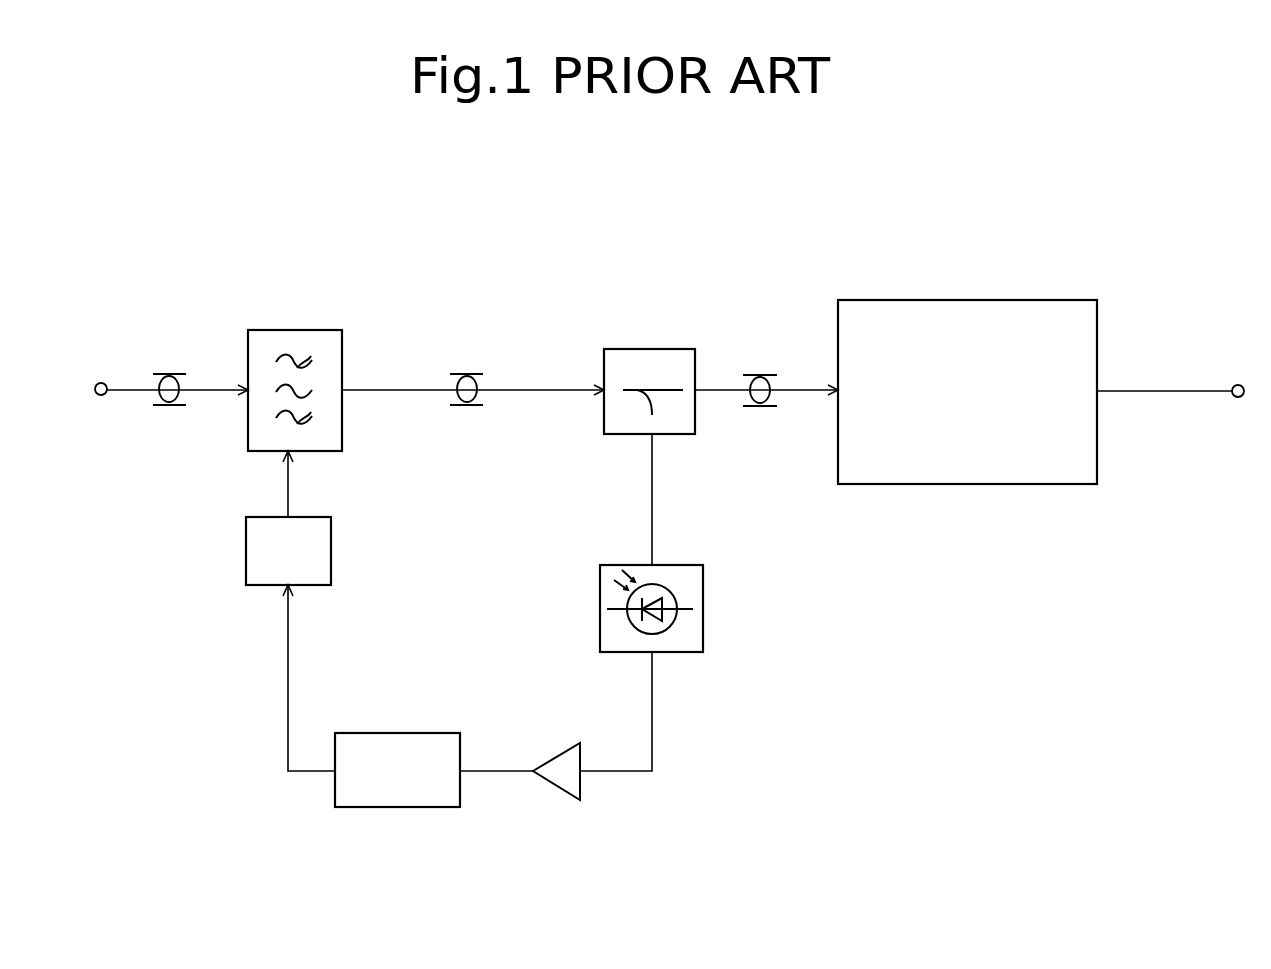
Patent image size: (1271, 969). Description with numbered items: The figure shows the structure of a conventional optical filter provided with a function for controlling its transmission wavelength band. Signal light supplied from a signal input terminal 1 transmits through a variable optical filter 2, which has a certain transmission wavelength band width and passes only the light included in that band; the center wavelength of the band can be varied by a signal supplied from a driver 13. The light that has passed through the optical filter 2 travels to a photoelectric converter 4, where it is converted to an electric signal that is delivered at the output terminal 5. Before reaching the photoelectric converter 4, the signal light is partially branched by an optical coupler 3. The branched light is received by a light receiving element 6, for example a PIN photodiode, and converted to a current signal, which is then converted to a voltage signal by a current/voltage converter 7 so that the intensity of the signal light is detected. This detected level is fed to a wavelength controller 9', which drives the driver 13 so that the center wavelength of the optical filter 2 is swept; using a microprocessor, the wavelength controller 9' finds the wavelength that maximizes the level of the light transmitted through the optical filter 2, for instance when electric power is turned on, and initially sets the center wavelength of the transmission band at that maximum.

The signal input terminal 1 is at (101, 383).
The variable optical filter 2 is at (301, 330).
The optical coupler 3 is at (653, 349).
The photoelectric converter 4 is at (963, 300).
The electrical output terminal 5 is at (1238, 385).
The light receiving element 6 is at (703, 607).
The current/voltage converter 7 is at (556, 790).
The wavelength controller 9' is at (397, 806).
The driver 13 is at (331, 548).